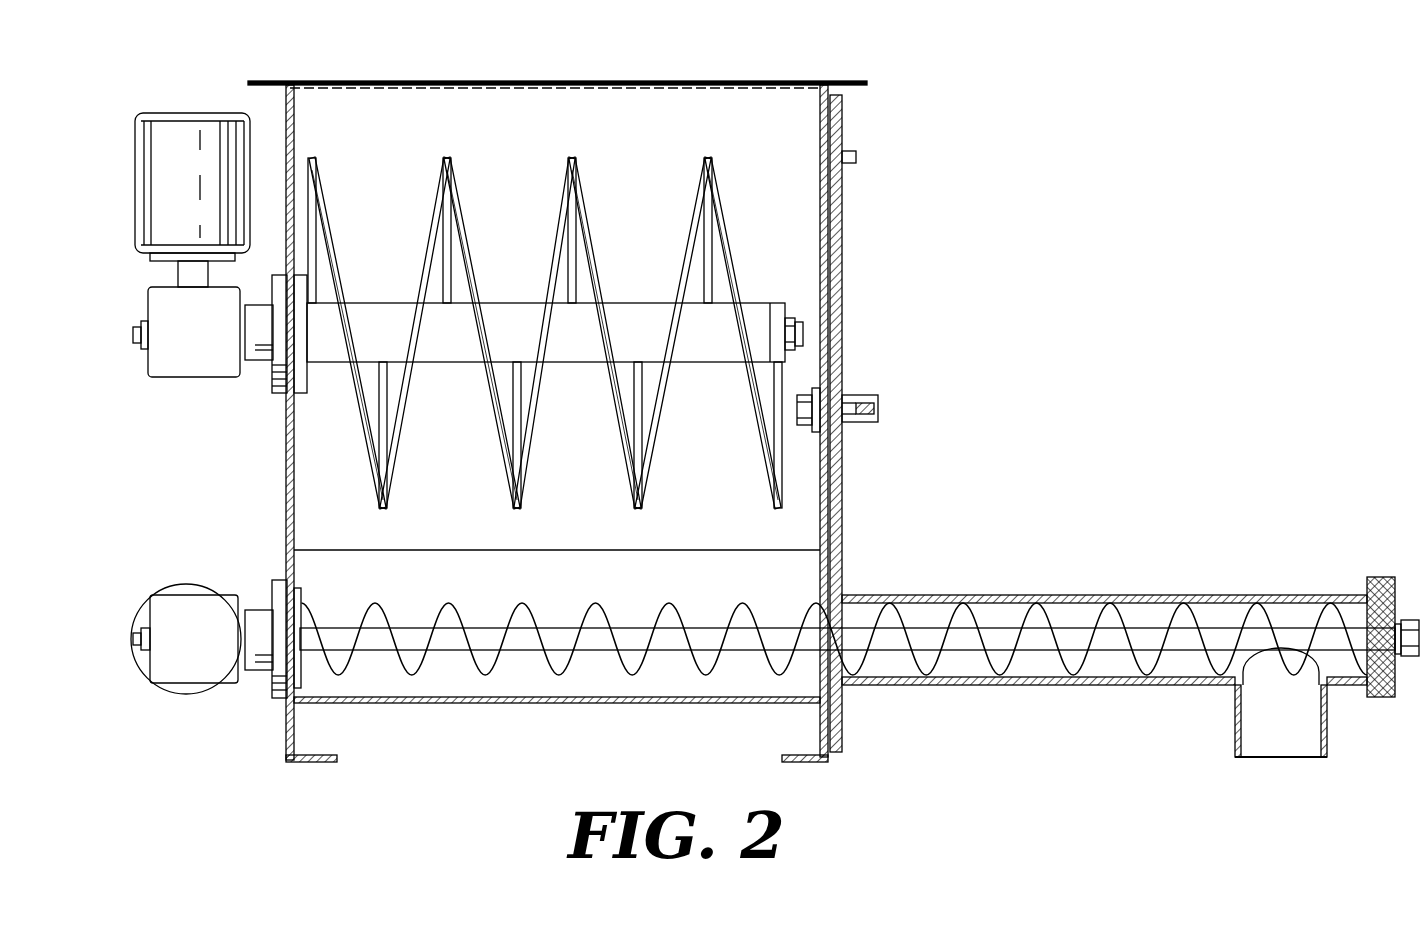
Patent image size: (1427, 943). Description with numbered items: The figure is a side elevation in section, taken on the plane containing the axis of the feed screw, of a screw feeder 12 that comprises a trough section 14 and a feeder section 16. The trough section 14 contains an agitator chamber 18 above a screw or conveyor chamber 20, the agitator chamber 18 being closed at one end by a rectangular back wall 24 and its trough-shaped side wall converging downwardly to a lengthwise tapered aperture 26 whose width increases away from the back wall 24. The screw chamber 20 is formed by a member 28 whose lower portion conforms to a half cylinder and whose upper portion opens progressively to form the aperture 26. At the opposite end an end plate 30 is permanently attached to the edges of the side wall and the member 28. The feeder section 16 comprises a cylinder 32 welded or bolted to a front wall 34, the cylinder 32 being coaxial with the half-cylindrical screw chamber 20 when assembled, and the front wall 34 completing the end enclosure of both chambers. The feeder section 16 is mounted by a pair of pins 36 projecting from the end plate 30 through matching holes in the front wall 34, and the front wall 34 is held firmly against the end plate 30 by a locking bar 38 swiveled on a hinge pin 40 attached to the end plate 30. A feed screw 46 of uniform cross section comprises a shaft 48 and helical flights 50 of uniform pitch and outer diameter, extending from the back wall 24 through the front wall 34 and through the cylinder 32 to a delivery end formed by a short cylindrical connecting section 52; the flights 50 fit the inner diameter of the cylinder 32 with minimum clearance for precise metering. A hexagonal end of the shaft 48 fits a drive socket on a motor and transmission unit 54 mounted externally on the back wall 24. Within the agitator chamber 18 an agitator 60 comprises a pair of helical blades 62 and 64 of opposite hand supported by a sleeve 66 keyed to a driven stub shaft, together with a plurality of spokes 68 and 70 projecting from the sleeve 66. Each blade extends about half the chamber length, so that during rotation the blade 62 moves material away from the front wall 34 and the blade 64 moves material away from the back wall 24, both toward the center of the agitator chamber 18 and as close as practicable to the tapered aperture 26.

The screw feeder 12 is at (1000, 150).
The trough section 14 is at (618, 58).
The feeder section 16 is at (1045, 537).
The agitator chamber 18 is at (581, 127).
The screw or conveyor chamber 20 is at (538, 590).
The back wall 24 is at (296, 508).
The tapered aperture 26 is at (515, 549).
The member 28 is at (598, 705).
The end plate 30 is at (822, 208).
The cylinder 32 is at (1095, 593).
The front wall 34 is at (844, 270).
The pins 36 is at (858, 158).
The locking bar 38 is at (880, 408).
The hinge pin 40 is at (848, 392).
The feed screw 46 is at (685, 605).
The shaft 48 is at (735, 660).
The helical flights 50 is at (752, 610).
The connecting section 52 is at (1329, 745).
The motor and transmission unit 54 is at (165, 566).
The agitator 60 is at (602, 175).
The helical shaped blade 62 is at (722, 166).
The helical shaped blade 64 is at (330, 186).
The sleeve 66 is at (520, 301).
The spokes 68 is at (708, 292).
The spokes 70 is at (455, 250).